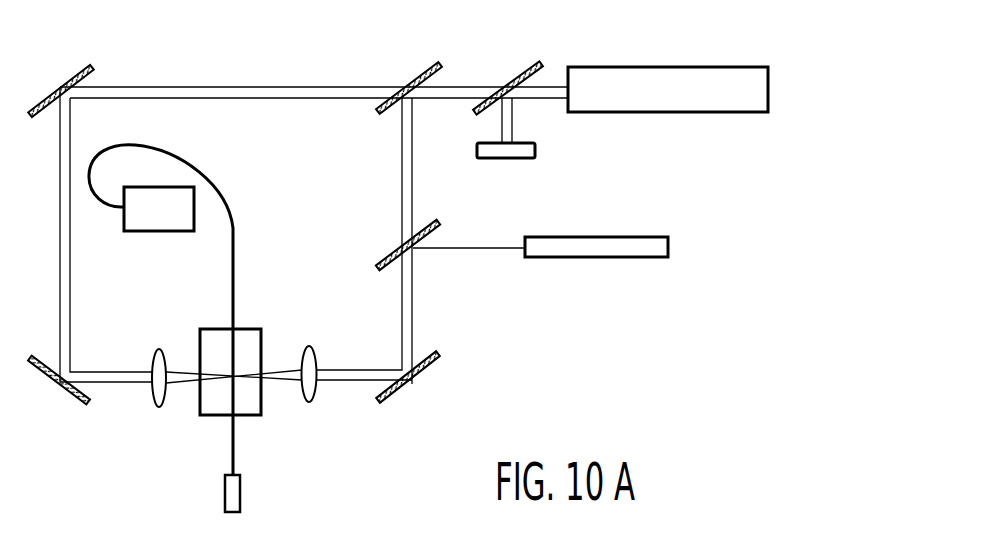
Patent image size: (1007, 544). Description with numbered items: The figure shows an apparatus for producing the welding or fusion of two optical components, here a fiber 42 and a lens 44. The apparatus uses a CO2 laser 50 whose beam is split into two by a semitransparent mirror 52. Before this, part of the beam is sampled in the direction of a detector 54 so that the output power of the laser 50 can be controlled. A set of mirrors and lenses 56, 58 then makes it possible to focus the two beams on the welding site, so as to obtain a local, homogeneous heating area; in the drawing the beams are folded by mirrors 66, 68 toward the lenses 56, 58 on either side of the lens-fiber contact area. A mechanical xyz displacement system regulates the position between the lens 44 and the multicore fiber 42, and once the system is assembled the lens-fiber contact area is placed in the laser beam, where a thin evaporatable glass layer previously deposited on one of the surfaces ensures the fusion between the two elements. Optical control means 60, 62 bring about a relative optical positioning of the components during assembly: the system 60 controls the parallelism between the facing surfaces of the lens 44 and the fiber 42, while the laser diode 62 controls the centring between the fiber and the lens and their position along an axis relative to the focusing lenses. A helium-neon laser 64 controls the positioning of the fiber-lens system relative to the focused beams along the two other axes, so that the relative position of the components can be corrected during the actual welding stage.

The fiber 42 is at (235, 222).
The lens 44 is at (228, 405).
The CO2 laser 50 is at (653, 73).
The semitransparent mirror 52 is at (423, 72).
The detector 54 is at (535, 150).
The lens 56 is at (157, 401).
The lens 58 is at (310, 400).
The optical control system 60 is at (150, 232).
The laser diode 62 is at (240, 503).
The helium-neon laser 64 is at (615, 250).
The mirror 66 is at (100, 380).
The mirror 68 is at (364, 376).